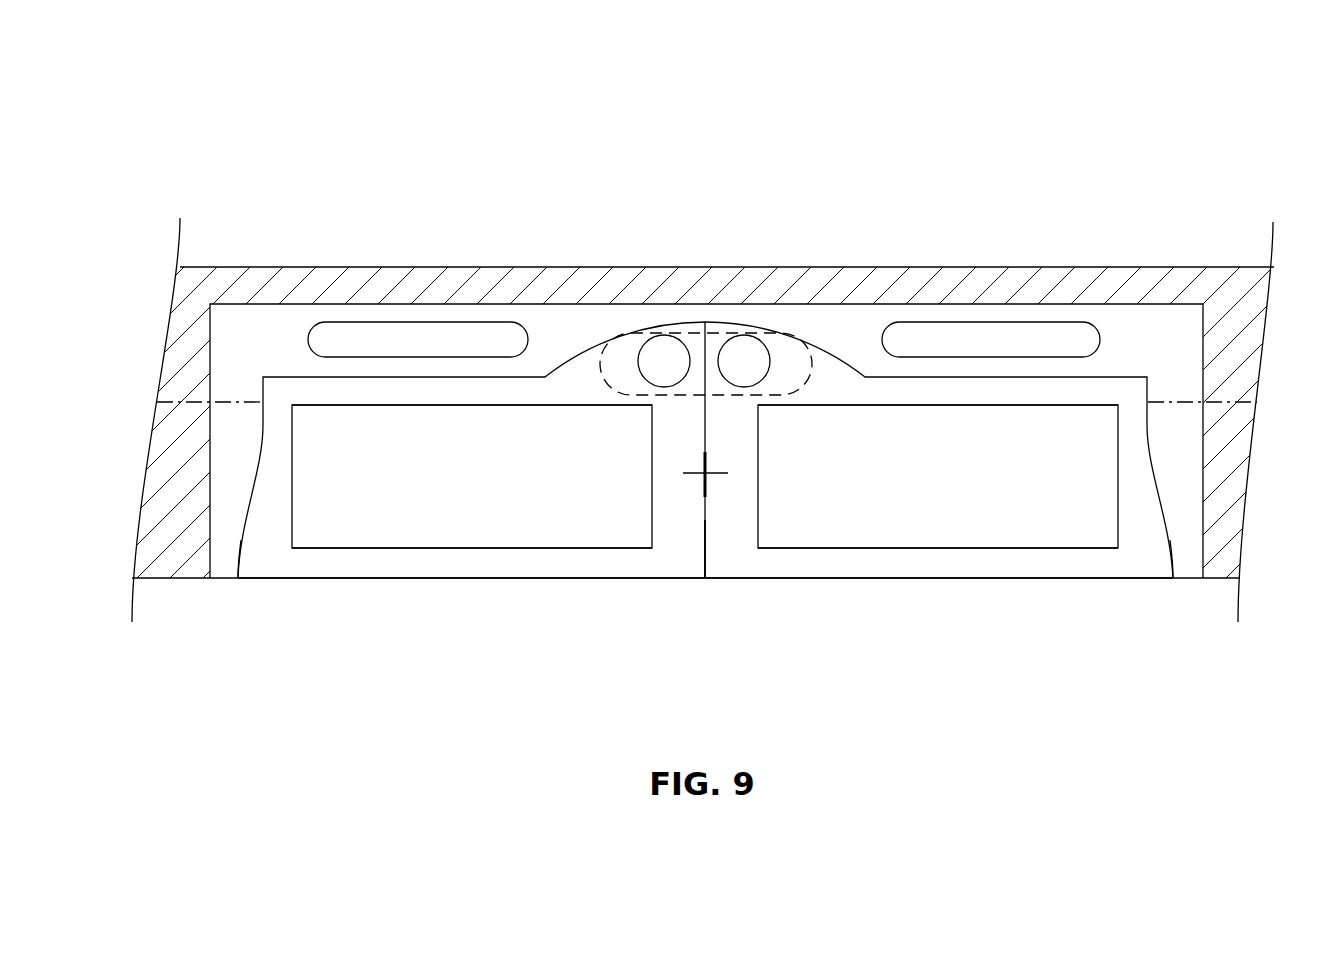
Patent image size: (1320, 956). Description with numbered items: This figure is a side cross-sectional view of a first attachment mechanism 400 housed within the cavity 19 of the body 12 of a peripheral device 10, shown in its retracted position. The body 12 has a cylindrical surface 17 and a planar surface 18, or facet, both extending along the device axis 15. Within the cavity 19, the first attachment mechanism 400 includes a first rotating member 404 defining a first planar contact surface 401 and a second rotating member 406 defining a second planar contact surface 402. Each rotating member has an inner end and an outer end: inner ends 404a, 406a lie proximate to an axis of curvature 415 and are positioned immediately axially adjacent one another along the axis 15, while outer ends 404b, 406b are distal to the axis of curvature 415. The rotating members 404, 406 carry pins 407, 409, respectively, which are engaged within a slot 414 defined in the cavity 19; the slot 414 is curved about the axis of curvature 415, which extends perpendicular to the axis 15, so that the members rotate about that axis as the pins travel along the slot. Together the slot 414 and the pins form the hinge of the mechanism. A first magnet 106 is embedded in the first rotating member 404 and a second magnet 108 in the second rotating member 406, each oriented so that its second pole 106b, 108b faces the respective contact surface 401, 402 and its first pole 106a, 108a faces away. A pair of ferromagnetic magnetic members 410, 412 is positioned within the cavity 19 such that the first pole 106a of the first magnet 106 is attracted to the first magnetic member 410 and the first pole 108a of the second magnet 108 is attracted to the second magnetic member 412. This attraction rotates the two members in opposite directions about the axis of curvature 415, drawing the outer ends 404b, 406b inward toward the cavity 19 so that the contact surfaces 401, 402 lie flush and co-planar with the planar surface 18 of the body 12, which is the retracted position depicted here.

The peripheral device 10 is at (324, 128).
The body 12 is at (1217, 265).
The axis 15 is at (1220, 401).
The cylindrical surface 17 is at (257, 267).
The planar surface 18 is at (1220, 581).
The cavity 19 is at (236, 385).
The first magnet 106 is at (557, 548).
The first pole of first magnet 106a is at (536, 402).
The second pole of first magnet 106b is at (368, 550).
The second magnet 108 is at (1083, 549).
The first pole of second magnet 108a is at (861, 402).
The second pole of second magnet 108b is at (975, 550).
The first attachment mechanism 400 is at (316, 618).
The first planar contact surface 401 is at (480, 578).
The second planar contact surface 402 is at (832, 578).
The first rotating member 404 is at (301, 374).
The inner end of first rotating member 404a is at (696, 590).
The outer end of first rotating member 404b is at (232, 582).
The second rotating member 406 is at (1106, 366).
The inner end of second rotating member 406a is at (714, 590).
The outer end of second rotating member 406b is at (1176, 580).
The pin 407 is at (682, 343).
The pin 409 is at (722, 342).
The first magnetic member 410 is at (395, 322).
The second magnetic member 412 is at (1000, 322).
The slot 414 is at (793, 347).
The axis of curvature 415 is at (697, 477).